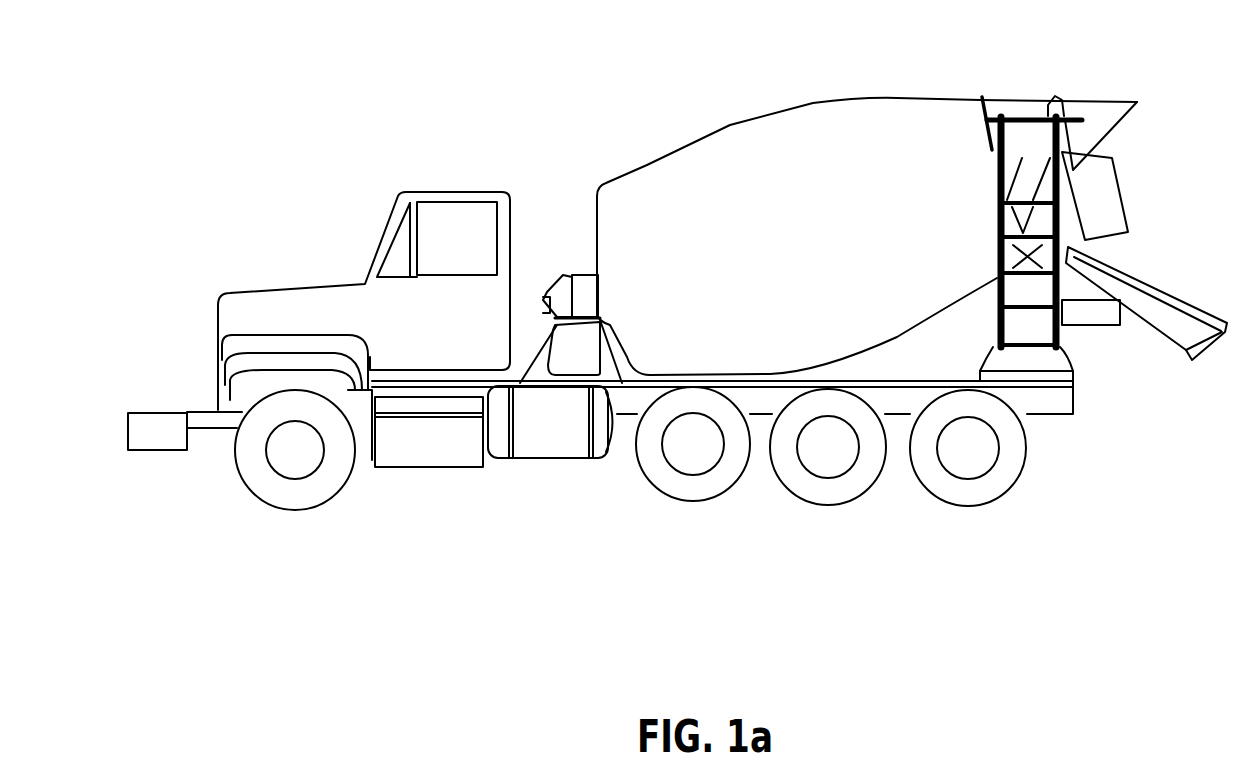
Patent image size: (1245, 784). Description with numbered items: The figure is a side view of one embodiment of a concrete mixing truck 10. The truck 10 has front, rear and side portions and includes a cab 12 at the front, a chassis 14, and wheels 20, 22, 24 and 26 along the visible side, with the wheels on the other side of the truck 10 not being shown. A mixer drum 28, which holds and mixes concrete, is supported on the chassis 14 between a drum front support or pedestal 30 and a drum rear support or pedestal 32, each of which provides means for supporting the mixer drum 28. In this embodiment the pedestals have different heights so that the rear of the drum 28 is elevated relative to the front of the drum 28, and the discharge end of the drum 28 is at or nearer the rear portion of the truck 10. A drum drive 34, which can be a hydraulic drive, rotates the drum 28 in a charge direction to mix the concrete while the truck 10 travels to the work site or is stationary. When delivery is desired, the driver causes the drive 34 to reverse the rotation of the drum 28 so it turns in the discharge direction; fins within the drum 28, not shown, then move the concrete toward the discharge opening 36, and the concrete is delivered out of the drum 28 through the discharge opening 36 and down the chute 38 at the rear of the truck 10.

The concrete mixing truck 10 is at (335, 233).
The cab 12 is at (445, 346).
The chassis 14 is at (1068, 402).
The wheel 20 is at (330, 485).
The wheel 22 is at (737, 480).
The wheel 24 is at (848, 495).
The wheel 26 is at (1017, 480).
The mixer drum 28 is at (680, 246).
The drum front support or pedestal 30 is at (577, 349).
The drum rear support or pedestal 32 is at (992, 347).
The drum drive 34 is at (556, 284).
The discharge opening 36 is at (1097, 131).
The chute 38 is at (1136, 249).